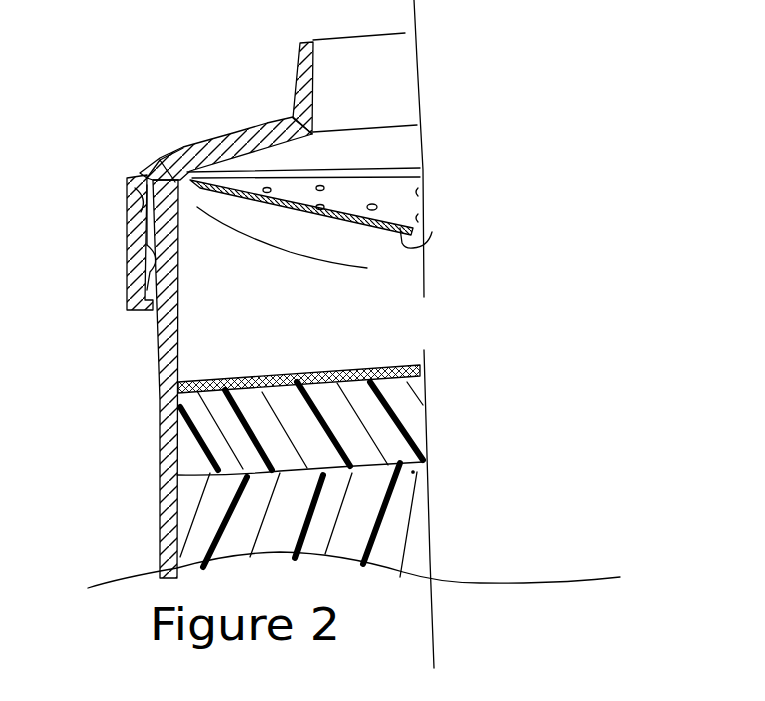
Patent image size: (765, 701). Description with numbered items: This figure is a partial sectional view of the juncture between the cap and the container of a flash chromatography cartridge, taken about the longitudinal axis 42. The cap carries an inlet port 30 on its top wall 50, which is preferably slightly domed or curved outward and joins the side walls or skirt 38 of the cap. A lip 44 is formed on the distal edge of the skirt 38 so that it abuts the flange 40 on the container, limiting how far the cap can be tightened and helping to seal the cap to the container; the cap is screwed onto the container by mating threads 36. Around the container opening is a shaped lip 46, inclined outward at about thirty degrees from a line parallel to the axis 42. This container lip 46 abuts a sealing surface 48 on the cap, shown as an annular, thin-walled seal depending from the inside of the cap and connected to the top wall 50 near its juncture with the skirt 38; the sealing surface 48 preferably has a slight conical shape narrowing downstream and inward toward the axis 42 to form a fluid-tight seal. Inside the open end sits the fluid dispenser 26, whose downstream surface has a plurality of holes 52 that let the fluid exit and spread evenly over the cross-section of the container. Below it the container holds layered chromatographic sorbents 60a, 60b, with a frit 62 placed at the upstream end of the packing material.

The fluid dispenser 26 is at (395, 172).
The inlet port 30 is at (297, 62).
The threads 36 is at (137, 275).
The skirt 38 is at (133, 208).
The flange 40 is at (157, 320).
The axis 42 is at (437, 622).
The lip 44 is at (130, 309).
The shaped lip 46 is at (143, 178).
The sealing surface 48 is at (367, 268).
The top wall 50 is at (245, 131).
The holes 52 is at (383, 207).
The sorbent 60a is at (180, 516).
The sorbent 60b is at (183, 448).
The frit 62 is at (207, 380).